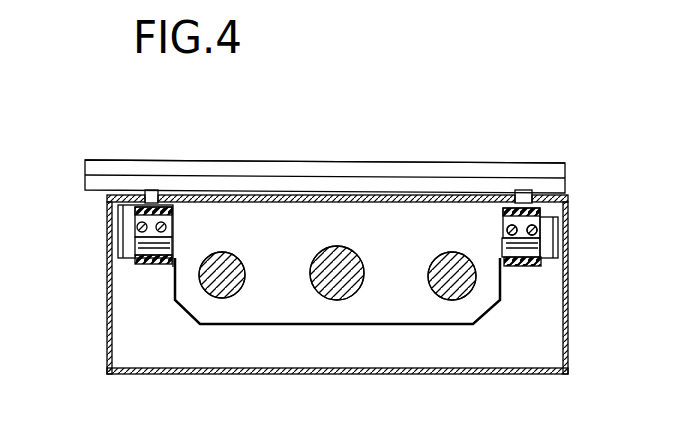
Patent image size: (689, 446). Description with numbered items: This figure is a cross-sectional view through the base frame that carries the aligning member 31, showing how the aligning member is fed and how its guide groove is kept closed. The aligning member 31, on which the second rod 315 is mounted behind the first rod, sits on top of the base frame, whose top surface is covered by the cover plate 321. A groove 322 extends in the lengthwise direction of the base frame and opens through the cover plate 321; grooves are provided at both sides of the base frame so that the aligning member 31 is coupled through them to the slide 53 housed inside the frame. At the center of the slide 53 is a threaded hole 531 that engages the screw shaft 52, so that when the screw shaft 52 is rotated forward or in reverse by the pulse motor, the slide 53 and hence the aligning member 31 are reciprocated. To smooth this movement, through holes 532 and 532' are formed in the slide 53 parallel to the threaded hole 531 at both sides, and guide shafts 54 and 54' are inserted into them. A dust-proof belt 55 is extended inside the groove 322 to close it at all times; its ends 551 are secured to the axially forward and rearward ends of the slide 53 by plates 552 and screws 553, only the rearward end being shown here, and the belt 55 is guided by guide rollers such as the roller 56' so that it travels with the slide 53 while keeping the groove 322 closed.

The aligning member 31 is at (309, 160).
The second rod 315 is at (230, 165).
The cover plate 321 is at (370, 196).
The groove 322 is at (143, 190).
The end of dust-proof belt 551 is at (137, 226).
The plate 552 is at (506, 232).
The screw 553 is at (507, 231).
The dust-proof belt 55 is at (160, 262).
The guide roller 56' is at (339, 250).
The slide 53 is at (263, 316).
The guide shaft 54 is at (150, 307).
The guide shaft 54' is at (465, 340).
The screw shaft 52 is at (311, 277).
The threaded hole 531 is at (324, 298).
The through hole 532 is at (196, 341).
The through hole 532' is at (430, 346).